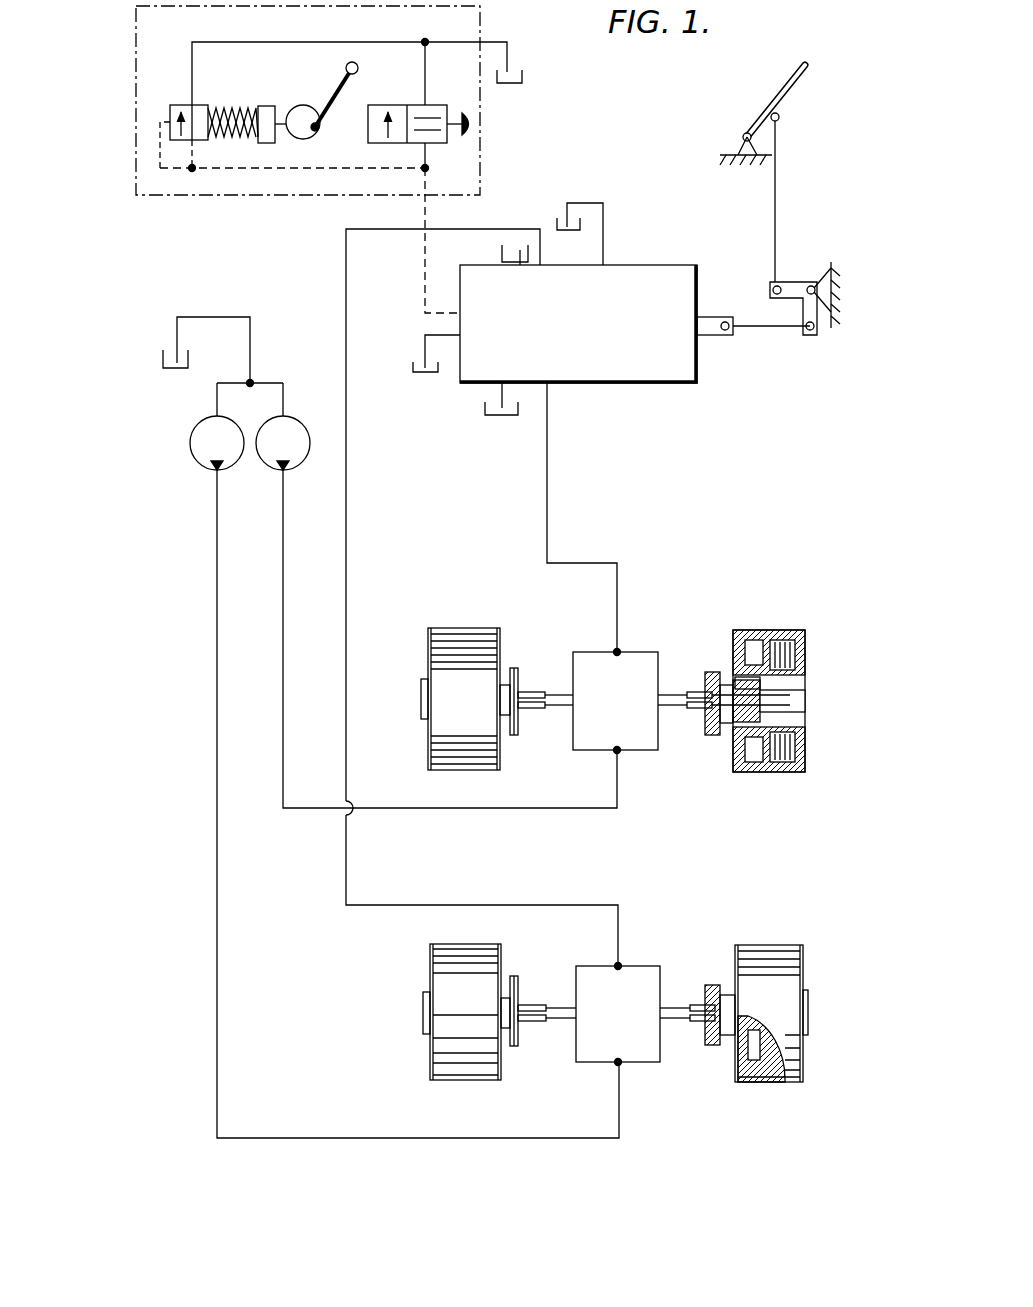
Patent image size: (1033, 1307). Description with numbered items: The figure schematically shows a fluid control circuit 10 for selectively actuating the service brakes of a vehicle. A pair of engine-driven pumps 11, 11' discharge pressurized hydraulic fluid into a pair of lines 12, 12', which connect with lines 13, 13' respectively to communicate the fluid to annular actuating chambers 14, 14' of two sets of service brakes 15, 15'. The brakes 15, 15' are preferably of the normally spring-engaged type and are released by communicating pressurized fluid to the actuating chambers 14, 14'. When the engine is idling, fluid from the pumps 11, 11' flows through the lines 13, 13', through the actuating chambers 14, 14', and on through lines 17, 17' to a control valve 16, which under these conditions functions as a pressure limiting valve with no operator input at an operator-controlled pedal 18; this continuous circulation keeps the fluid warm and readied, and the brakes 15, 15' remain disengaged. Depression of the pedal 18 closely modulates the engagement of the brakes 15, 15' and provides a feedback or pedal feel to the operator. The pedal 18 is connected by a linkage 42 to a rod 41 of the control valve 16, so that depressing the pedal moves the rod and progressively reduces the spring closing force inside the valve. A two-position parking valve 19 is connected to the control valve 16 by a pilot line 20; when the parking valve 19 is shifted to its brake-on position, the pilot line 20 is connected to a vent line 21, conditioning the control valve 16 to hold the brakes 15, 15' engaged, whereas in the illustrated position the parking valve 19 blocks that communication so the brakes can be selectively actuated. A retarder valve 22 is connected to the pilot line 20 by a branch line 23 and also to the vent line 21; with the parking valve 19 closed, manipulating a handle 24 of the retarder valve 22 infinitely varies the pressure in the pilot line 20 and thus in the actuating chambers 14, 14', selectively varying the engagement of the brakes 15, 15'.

The fluid control circuit 10 is at (480, 571).
The engine-driven pump 11 is at (183, 426).
The engine-driven pump 11' is at (254, 393).
The line 12 is at (384, 804).
The line 12' is at (450, 639).
The line 13 is at (602, 1037).
The line 13' is at (604, 724).
The annular actuating chamber 14 is at (733, 1054).
The annular actuating chamber 14' is at (716, 656).
The service brake 15 is at (584, 985).
The service brake 15' is at (632, 668).
The control valve 16 is at (597, 334).
The line 17 is at (482, 597).
The line 17' is at (593, 517).
The operator-controlled pedal 18 is at (768, 92).
The two-position parking valve 19 is at (466, 144).
The pilot line 20 is at (423, 250).
The vent line 21 is at (490, 41).
The retarder valve 22 is at (186, 176).
The branch line 23 is at (275, 172).
The handle 24 is at (346, 69).
The rod 41 is at (711, 336).
The linkage 42 is at (796, 339).